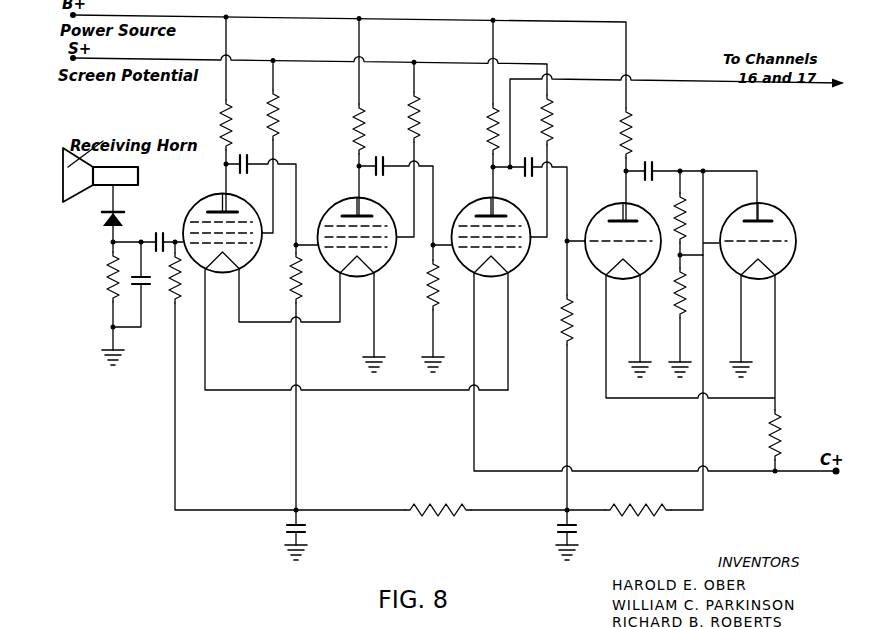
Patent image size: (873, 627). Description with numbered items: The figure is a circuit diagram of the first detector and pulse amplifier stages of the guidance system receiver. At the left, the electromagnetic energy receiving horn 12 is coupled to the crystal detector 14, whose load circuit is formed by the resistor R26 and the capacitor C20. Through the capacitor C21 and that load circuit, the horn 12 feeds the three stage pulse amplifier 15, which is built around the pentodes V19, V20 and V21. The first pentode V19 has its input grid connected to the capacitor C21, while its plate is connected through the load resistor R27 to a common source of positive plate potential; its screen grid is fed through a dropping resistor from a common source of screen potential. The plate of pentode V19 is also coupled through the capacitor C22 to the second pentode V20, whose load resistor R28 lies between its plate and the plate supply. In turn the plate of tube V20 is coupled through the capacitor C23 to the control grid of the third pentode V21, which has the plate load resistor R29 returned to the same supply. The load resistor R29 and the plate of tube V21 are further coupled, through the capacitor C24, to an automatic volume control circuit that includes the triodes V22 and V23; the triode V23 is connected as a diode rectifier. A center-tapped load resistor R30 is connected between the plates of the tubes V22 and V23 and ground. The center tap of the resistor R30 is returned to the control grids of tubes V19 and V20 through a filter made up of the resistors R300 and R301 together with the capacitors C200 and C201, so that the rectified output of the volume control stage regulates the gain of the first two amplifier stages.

The electromagnetic energy receiving horn 12 is at (72, 191).
The crystal detector 14 is at (125, 208).
The three stage pulse amplifier 15 is at (377, 397).
The capacitor C20 is at (138, 285).
The capacitor C21 is at (164, 226).
The capacitor C22 is at (248, 179).
The capacitor C23 is at (384, 180).
The capacitor C24 is at (522, 181).
The capacitor C200 is at (312, 535).
The capacitor C201 is at (583, 540).
The resistor R26 is at (99, 303).
The load resistor R27 is at (212, 124).
The load resistor R28 is at (340, 127).
The plate load resistor R29 is at (475, 127).
The center-tapped load resistor R30 is at (672, 274).
The resistor R300 is at (438, 498).
The resistor R301 is at (638, 500).
The pentode V19 is at (228, 246).
The pentode V20 is at (363, 251).
The pentode V21 is at (495, 251).
The triode V22 is at (626, 255).
The triode V23 is at (764, 255).